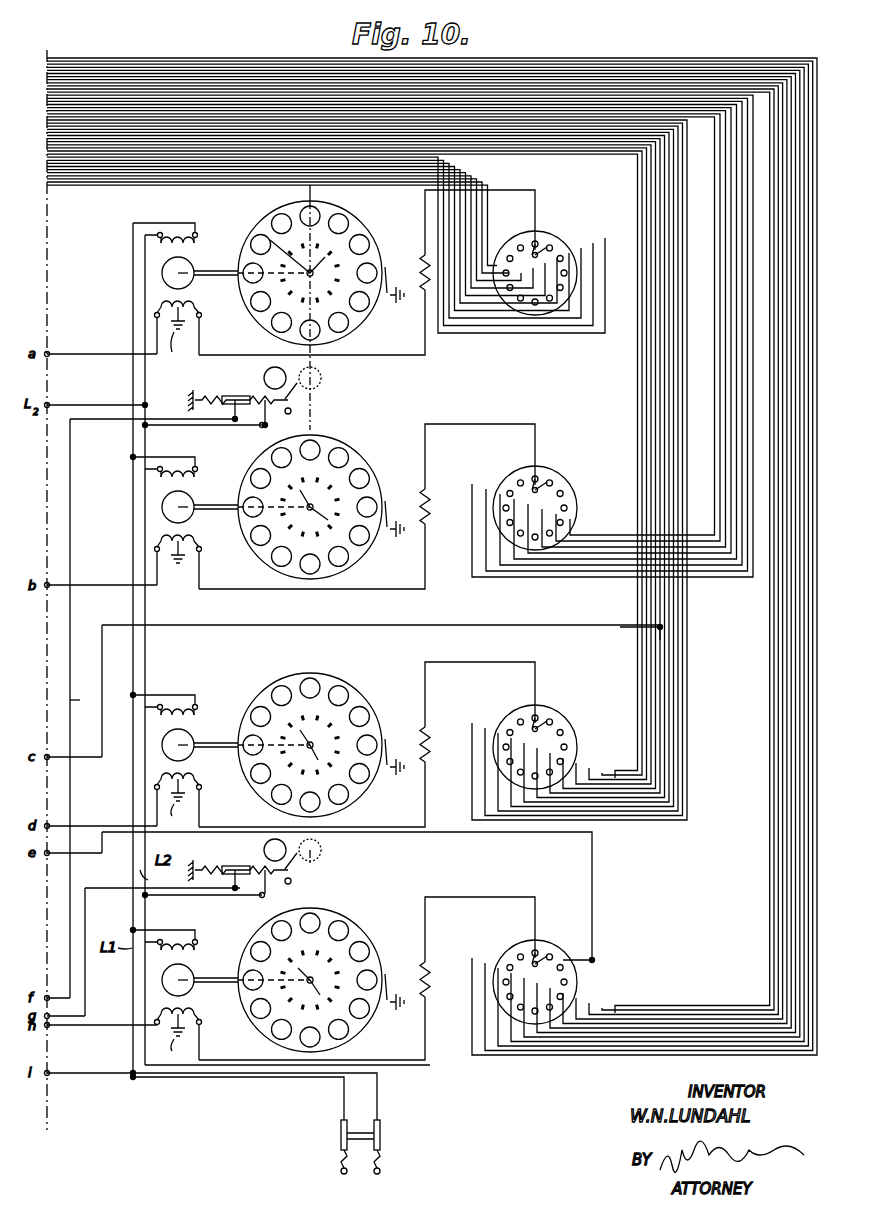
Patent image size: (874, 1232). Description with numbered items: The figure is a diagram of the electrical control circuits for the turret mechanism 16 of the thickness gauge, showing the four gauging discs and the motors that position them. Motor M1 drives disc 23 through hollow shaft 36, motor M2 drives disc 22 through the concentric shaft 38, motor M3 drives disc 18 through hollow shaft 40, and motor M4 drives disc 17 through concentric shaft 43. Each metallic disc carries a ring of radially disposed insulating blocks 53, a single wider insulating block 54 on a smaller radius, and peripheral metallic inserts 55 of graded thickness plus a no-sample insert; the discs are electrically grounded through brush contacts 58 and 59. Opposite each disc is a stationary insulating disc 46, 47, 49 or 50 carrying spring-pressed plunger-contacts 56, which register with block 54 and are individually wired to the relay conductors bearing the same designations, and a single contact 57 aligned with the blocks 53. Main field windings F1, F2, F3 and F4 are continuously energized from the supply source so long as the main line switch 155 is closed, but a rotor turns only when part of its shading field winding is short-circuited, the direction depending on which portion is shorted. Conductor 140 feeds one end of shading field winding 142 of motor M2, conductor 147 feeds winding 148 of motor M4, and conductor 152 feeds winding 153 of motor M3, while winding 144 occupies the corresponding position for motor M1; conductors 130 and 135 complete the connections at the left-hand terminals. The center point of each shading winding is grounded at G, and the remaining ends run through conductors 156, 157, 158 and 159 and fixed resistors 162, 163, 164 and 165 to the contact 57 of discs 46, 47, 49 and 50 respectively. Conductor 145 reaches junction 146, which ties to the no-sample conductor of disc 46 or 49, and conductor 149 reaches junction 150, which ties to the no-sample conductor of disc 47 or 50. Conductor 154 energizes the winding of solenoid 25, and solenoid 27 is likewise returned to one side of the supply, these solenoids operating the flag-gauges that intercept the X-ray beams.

The turret mechanism 16 is at (274, 1094).
The horizontally rotatable disc 17 is at (362, 706).
The horizontally rotatable disc 18 is at (362, 940).
The vertically disposed disc 22 is at (368, 232).
The vertically disposed disc 23 is at (362, 466).
The solenoid 25 is at (248, 868).
The solenoid 27 is at (248, 396).
The hollow shaft 36 is at (202, 506).
The shaft 38 is at (202, 272).
The hollow shaft 40 is at (200, 980).
The concentric shaft 43 is at (204, 745).
The insulating disc 46 is at (515, 237).
The insulating disc 47 is at (515, 472).
The insulating disc 49 is at (515, 712).
The insulating disc 50 is at (515, 949).
The insulating block 53 is at (321, 631).
The insulating block 54 is at (273, 243).
The metallic insert 55 is at (340, 322).
The plunger-contact 56 is at (540, 628).
The spring-pressed contact 57 is at (536, 240).
The brush contact 58 is at (390, 274).
The brush contact 59 is at (390, 508).
The conductor 130 is at (108, 606).
The conductor 135 is at (70, 700).
The conductor 140 is at (108, 376).
The shading field winding 142 is at (195, 306).
The field coil 144 is at (195, 540).
The conductor 145 is at (190, 630).
The junction 146 is at (645, 636).
The conductor 147 is at (82, 826).
The shading field winding 148 is at (195, 778).
The conductor 149 is at (90, 860).
The junction 150 is at (600, 958).
The conductor 152 is at (90, 1030).
The shading field winding 153 is at (195, 1013).
The conductor 154 is at (90, 893).
The main line switch 155 is at (382, 1135).
The conductor 156 is at (365, 357).
The conductor 157 is at (365, 591).
The conductor 158 is at (358, 829).
The conductor 159 is at (400, 1068).
The fixed resistor 162 is at (425, 255).
The fixed resistor 163 is at (425, 499).
The fixed resistor 164 is at (425, 729).
The fixed resistor 165 is at (425, 966).
The motor M1 is at (154, 507).
The motor M2 is at (154, 273).
The motor M3 is at (154, 980).
The motor M4 is at (154, 747).
The main field winding F1 is at (198, 476).
The main field winding F2 is at (194, 242).
The main field winding F3 is at (200, 951).
The main field winding F4 is at (198, 714).